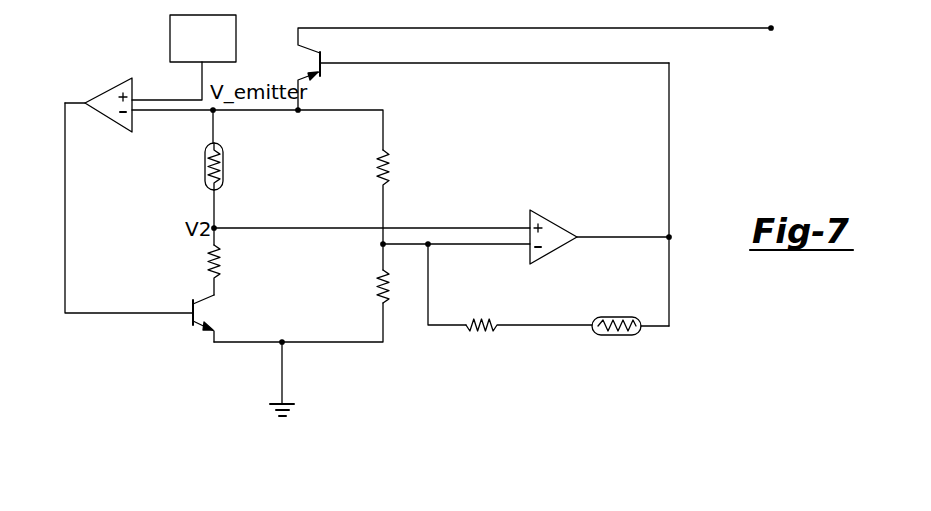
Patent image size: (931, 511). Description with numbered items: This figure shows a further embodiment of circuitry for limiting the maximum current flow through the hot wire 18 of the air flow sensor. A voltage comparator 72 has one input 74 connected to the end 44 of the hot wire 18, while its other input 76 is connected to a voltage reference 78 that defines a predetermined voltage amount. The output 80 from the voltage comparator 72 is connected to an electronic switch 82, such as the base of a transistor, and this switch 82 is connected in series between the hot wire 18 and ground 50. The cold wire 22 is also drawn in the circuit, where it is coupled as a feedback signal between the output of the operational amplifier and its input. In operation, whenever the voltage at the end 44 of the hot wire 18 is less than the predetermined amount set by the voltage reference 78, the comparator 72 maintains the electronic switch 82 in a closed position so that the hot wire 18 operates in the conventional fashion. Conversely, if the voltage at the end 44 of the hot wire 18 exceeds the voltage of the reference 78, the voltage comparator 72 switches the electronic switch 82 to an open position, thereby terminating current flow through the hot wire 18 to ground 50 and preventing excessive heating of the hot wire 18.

The hot wire 18 is at (205, 171).
The cold wire 22 is at (607, 337).
The end of the hot wire 44 is at (214, 124).
The ground 50 is at (282, 420).
The voltage comparator 72 is at (107, 91).
The input of the voltage comparator 74 is at (182, 112).
The other input of the voltage comparator 76 is at (152, 99).
The voltage reference 78 is at (212, 49).
The output of the voltage comparator 80 is at (65, 272).
The electronic switch 82 is at (193, 324).